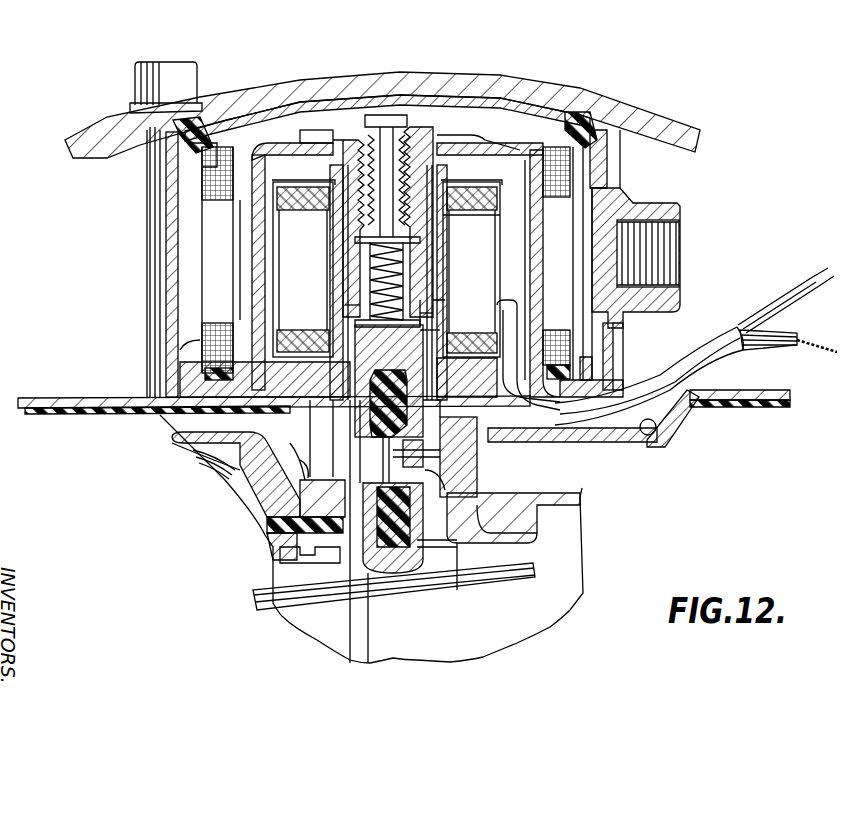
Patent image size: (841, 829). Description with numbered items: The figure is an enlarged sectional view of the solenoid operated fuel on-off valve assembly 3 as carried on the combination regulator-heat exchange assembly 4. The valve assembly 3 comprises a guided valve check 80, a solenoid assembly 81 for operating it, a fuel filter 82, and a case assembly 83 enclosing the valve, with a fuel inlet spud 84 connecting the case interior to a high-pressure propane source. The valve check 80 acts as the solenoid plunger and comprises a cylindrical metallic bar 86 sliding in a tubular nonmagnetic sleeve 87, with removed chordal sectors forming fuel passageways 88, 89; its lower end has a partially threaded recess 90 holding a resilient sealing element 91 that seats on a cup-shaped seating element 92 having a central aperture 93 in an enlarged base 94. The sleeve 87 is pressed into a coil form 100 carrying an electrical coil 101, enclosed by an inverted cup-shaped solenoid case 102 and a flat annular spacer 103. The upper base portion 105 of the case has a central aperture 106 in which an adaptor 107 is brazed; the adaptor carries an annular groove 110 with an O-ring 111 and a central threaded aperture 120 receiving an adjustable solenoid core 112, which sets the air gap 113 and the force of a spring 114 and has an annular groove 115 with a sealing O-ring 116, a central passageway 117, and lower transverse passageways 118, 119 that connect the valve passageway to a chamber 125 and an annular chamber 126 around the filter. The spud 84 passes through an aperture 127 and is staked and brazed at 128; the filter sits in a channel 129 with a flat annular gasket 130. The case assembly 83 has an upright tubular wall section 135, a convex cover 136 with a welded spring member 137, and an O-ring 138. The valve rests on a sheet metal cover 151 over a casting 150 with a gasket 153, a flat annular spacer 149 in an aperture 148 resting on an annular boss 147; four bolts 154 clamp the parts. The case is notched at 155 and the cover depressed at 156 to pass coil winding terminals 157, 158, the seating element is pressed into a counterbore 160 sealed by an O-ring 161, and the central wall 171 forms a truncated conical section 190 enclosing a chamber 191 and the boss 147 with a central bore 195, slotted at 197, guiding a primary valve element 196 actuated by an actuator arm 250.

The fuel on-off valve assembly 3 is at (100, 247).
The combination regulator-heat exchange assembly 4 is at (580, 497).
The guided valve check 80 is at (312, 462).
The solenoid assembly 81 is at (275, 165).
The fuel filter 82 is at (170, 222).
The case assembly 83 is at (517, 78).
The fuel inlet spud 84 is at (682, 219).
The cylindrical metallic bar 86 is at (433, 311).
The tubular nonmagnetic sleeve 87 is at (342, 218).
The fuel passageway 88 is at (440, 327).
The fuel passageway 89 is at (345, 327).
The partially threaded recess 90 is at (460, 430).
The resilient sealing element 91 is at (440, 440).
The seating element 92 is at (477, 450).
The central aperture 93 is at (470, 486).
The enlarged base 94 is at (482, 506).
The coil form 100 is at (235, 262).
The electrical coil 101 is at (258, 223).
The solenoid case 102 is at (522, 247).
The flat annular spacer 103 is at (248, 328).
The upper base portion 105 is at (462, 135).
The central aperture 106 is at (320, 150).
The adaptor 107 is at (430, 135).
The annular groove 110 is at (440, 180).
The O-ring 111 is at (471, 209).
The adjustable solenoid core 112 is at (375, 115).
The air gap 113 is at (345, 310).
The spring 114 is at (355, 242).
The annular groove 115 is at (352, 259).
The sealing O-ring 116 is at (350, 276).
The central passageway 117 is at (388, 200).
The lower transverse passageway 118 is at (428, 300).
The lower transverse passageway 119 is at (345, 293).
The central threaded aperture 120 is at (352, 118).
The chamber 125 is at (286, 89).
The annular chamber 126 is at (176, 242).
The aperture 127 is at (617, 316).
The staked and brazed joint 128 is at (622, 190).
The channel 129 is at (185, 357).
The flat annular gasket 130 is at (182, 377).
The tubular wall section 135 is at (165, 276).
The convex cover 136 is at (222, 117).
The spring member 137 is at (185, 150).
The O-ring 138 is at (597, 160).
The annular boss 147 is at (470, 468).
The aperture 148 is at (275, 428).
The flat annular spacer 149 is at (308, 432).
The casting 150 is at (583, 508).
The sheet metal cover 151 is at (50, 387).
The gasket 153 is at (75, 418).
The bolts 154 is at (133, 84).
The notch 155 is at (520, 310).
The depression 156 is at (655, 430).
The coil winding terminal 157 is at (775, 312).
The coil winding terminal 158 is at (778, 340).
The counterbore 160 is at (290, 510).
The O-ring 161 is at (310, 450).
The central wall 171 is at (584, 472).
The truncated conical section 190 is at (175, 430).
The chamber 191 is at (235, 468).
The central bore 195 is at (360, 482).
The primary valve element 196 is at (428, 553).
The slot 197 is at (475, 546).
The actuator arm 250 is at (430, 585).